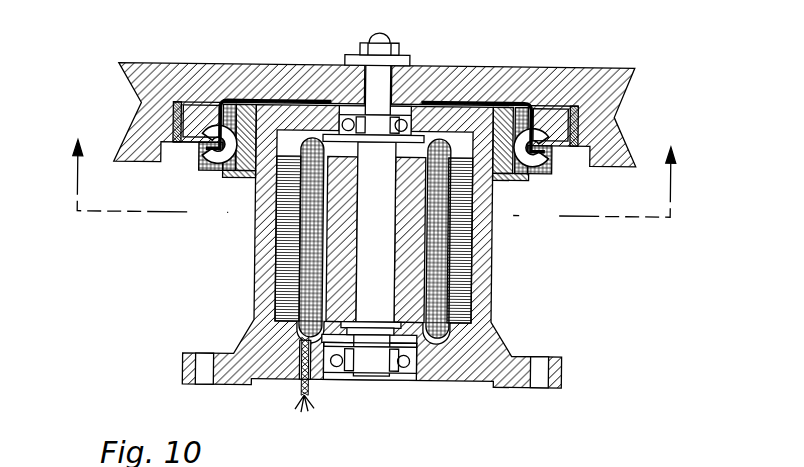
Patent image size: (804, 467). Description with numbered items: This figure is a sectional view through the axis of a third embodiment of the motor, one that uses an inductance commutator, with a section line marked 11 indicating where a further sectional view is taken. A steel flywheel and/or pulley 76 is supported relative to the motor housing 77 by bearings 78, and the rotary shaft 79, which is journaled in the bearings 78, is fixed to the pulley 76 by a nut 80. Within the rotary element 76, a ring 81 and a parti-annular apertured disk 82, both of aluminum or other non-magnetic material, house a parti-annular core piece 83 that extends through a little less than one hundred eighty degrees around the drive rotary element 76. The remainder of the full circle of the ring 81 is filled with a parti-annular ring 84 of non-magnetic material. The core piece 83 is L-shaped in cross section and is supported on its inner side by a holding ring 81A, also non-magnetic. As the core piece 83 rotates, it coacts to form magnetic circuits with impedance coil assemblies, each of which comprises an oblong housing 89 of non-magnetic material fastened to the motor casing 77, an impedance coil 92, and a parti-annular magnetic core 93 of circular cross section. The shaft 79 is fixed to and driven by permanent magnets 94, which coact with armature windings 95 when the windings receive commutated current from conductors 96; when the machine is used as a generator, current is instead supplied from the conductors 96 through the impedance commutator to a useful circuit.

The flywheel and/or pulley 76 is at (155, 70).
The motor housing 77 is at (484, 292).
The bearings 78 is at (343, 114).
The rotary shaft 79 is at (372, 216).
The nut 80 is at (392, 53).
The ring 81 is at (173, 117).
The holding ring 81A is at (217, 102).
The parti-annular apertured disk 82 is at (193, 104).
The parti-annular core piece 83 is at (185, 142).
The parti-annular ring 84 is at (592, 98).
The oblong housing 89 is at (240, 179).
The impedance coil 92 is at (213, 155).
The parti-annular magnetic core 93 is at (216, 148).
The permanent magnets 94 is at (405, 211).
The armature windings 95 is at (310, 279).
The conductors 96 is at (302, 393).
The section line 11 is at (374, 165).